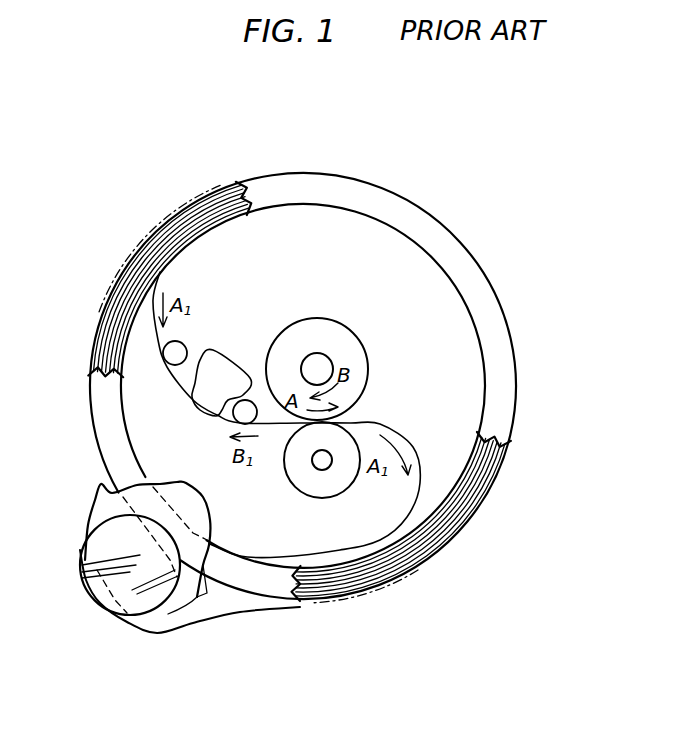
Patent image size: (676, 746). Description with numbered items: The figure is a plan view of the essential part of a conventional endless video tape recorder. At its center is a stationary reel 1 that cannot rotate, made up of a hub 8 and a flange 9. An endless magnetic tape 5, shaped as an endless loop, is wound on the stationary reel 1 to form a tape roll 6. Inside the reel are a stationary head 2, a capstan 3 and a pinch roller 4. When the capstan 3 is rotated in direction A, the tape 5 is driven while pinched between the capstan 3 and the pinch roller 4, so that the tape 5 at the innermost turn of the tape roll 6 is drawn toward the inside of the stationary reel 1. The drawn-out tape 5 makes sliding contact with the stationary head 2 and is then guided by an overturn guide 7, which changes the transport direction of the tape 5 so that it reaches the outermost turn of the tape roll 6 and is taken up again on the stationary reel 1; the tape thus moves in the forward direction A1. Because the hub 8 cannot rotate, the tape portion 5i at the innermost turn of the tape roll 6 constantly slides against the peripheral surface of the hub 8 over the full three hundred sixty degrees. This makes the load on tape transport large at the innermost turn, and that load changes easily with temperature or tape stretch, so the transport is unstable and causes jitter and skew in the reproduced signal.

The stationary reel 1 is at (493, 362).
The stationary head 2 is at (212, 395).
The capstan 3 is at (343, 337).
The pinch roller 4 is at (298, 470).
The endless magnetic tape 5 is at (384, 424).
The tape portion 5i is at (198, 232).
The tape roll 6 is at (490, 468).
The overturn guide 7 is at (118, 590).
The hub 8 is at (237, 217).
The flange 9 is at (463, 247).